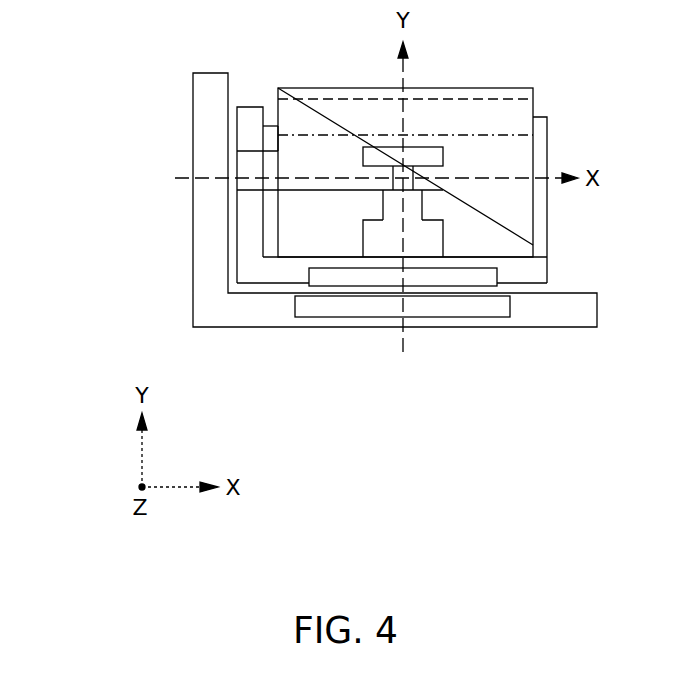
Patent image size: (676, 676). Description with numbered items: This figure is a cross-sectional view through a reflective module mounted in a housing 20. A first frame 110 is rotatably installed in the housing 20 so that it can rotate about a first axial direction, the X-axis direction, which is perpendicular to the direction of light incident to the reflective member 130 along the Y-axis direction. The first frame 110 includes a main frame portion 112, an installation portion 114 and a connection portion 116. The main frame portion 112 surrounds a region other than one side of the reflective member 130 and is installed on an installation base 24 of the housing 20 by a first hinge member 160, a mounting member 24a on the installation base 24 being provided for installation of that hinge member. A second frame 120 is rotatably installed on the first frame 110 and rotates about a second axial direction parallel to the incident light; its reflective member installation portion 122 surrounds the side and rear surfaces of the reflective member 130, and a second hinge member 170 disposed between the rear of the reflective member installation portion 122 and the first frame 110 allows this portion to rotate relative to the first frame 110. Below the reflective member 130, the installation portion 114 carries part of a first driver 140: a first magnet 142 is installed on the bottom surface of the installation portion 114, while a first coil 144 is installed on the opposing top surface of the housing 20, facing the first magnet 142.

The housing 20 is at (208, 327).
The installation base 24 is at (350, 261).
The mounting member 24a is at (383, 197).
The first frame 110 is at (60, 70).
The main frame portion 112 is at (243, 157).
The installation portion 114 is at (260, 268).
The connection portion 116 is at (533, 135).
The second frame 120 is at (405, 82).
The reflective member installation portion 122 is at (458, 117).
The reflective member 130 is at (533, 88).
The first driver 140 is at (402, 342).
The first magnet 142 is at (338, 278).
The first coil 144 is at (458, 302).
The first hinge member 160 is at (385, 181).
The second hinge member 170 is at (268, 158).